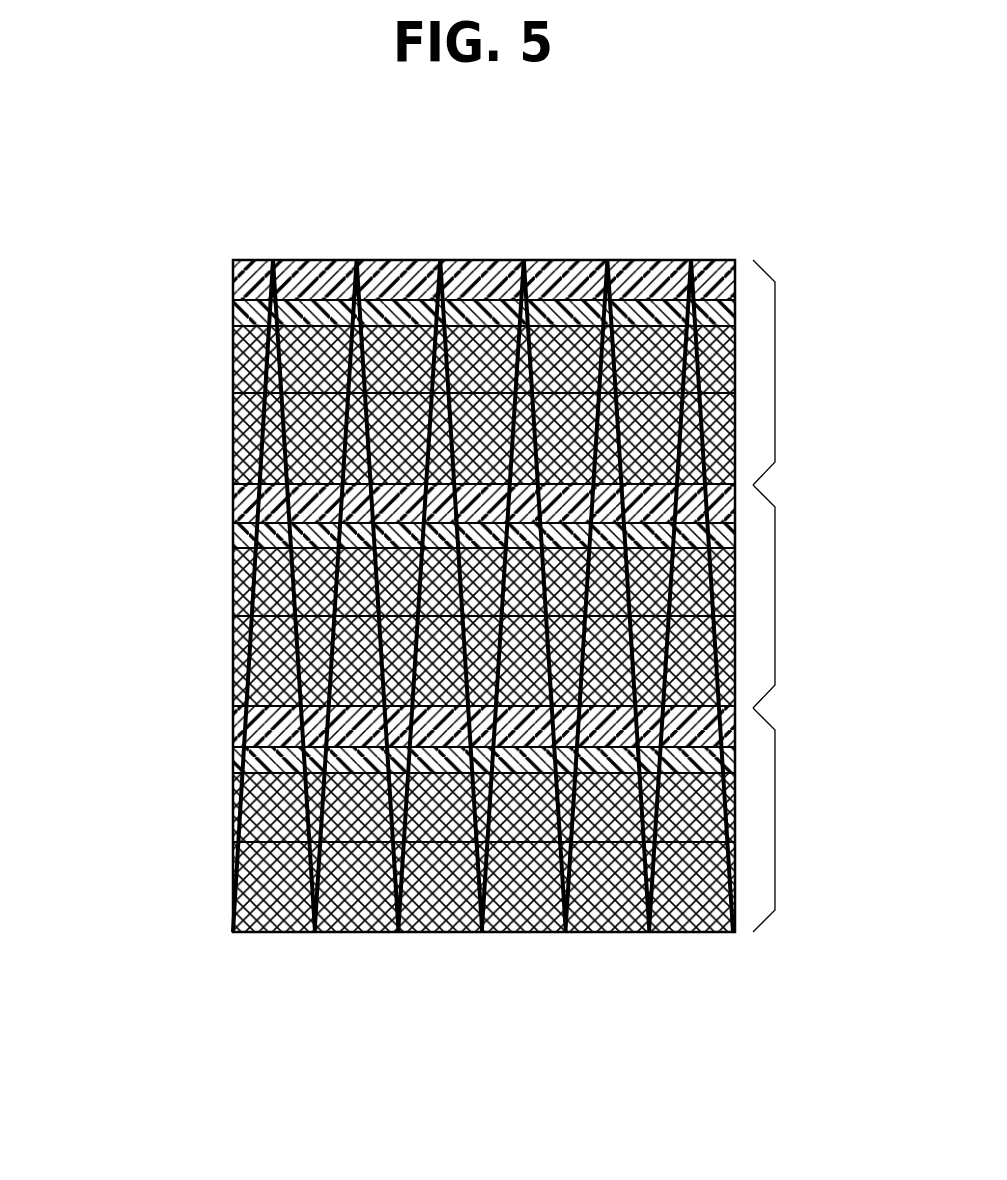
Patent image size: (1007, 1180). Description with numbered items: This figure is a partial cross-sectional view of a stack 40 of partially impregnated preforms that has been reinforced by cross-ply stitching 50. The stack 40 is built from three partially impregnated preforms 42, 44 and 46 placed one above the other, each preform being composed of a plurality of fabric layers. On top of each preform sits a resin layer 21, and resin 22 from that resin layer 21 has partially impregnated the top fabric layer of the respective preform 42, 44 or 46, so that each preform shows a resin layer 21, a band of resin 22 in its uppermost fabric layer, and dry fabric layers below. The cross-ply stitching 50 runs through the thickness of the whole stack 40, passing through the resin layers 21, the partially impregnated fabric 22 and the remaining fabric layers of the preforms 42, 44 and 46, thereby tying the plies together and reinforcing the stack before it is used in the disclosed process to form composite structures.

The resin layer 21 is at (230, 278).
The resin 22 is at (230, 310).
The stack of partially impregnated preforms 40 is at (207, 950).
The partially impregnated preform 42 is at (775, 822).
The partially impregnated preform 44 is at (775, 598).
The partially impregnated preform 46 is at (775, 373).
The cross-ply stitching 50 is at (453, 368).